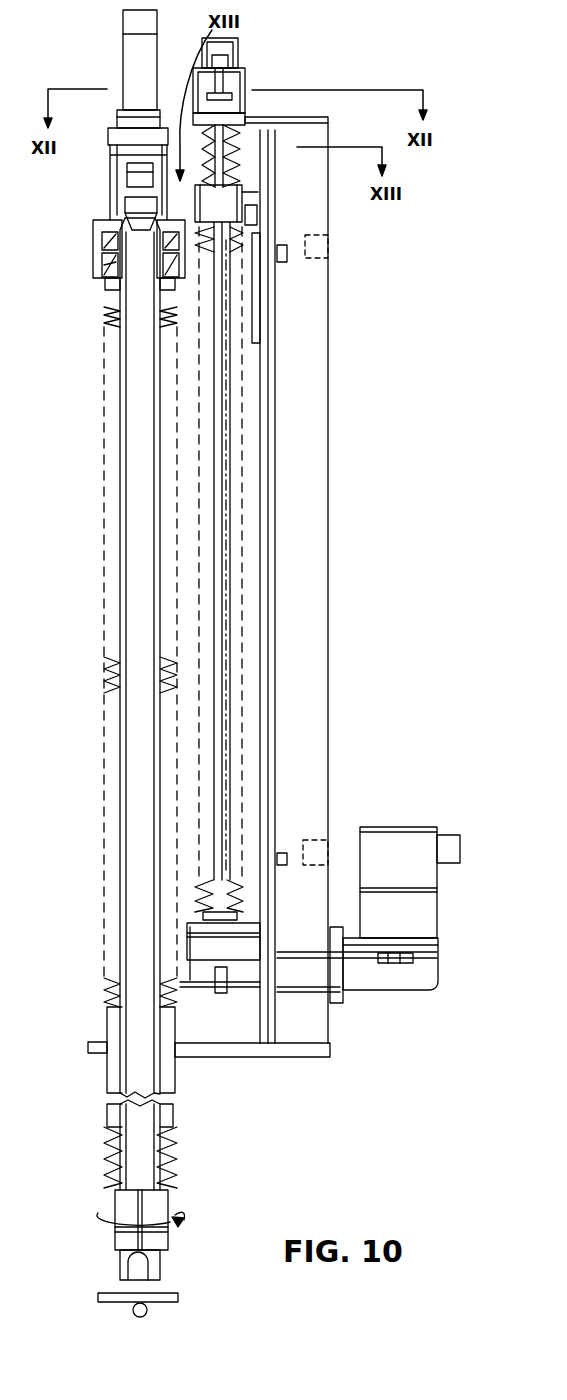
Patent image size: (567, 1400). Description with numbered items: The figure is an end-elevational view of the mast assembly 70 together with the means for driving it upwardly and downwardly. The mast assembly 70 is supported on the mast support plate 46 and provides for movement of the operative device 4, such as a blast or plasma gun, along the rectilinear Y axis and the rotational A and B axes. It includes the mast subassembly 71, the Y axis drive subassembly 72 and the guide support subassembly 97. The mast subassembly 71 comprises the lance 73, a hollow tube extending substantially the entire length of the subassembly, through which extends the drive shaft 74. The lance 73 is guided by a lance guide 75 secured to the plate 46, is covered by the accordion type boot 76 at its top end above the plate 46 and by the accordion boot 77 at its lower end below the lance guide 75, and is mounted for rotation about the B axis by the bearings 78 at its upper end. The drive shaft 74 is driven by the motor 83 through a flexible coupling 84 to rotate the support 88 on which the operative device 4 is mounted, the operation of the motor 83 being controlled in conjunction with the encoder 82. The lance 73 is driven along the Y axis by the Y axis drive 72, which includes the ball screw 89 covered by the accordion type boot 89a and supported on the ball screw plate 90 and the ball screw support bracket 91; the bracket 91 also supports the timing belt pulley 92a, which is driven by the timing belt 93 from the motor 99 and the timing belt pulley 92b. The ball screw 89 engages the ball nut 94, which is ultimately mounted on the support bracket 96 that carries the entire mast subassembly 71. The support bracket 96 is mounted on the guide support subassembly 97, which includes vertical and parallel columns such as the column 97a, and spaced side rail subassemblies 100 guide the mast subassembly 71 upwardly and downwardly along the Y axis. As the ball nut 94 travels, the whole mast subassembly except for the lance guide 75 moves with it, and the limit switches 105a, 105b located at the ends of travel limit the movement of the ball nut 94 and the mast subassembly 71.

The operative device 4 is at (153, 1317).
The mast support plate 46 is at (312, 1053).
The mast assembly 70 is at (357, 423).
The mast subassembly 71 is at (110, 514).
The Y axis drive subassembly 72 is at (253, 412).
The lance 73 is at (122, 430).
The drive shaft 74 is at (137, 853).
The lance guide 75 is at (108, 1030).
The accordion type boot 76 is at (117, 327).
The accordion boot 77 is at (112, 996).
The bearings 78 is at (103, 250).
The encoder 82 is at (152, 18).
The motor 83 is at (133, 67).
The flexible coupling 84 is at (130, 182).
The support 88 is at (103, 1293).
The ball screw 89 is at (223, 660).
The accordion type boot 89a is at (258, 222).
The ball screw plate 90 is at (320, 118).
The ball screw support bracket 91 is at (187, 943).
The timing belt pulley 92a is at (242, 952).
The timing belt pulley 92b is at (407, 963).
The timing belt 93 is at (293, 960).
The ball nut 94 is at (242, 195).
The support bracket 96 is at (182, 305).
The guide support subassembly 97 is at (321, 466).
The column 97a is at (322, 727).
The motor 99 is at (435, 923).
The side rail subassemblies 100 is at (255, 215).
The limit switch 105a is at (320, 258).
The limit switch 105b is at (335, 843).